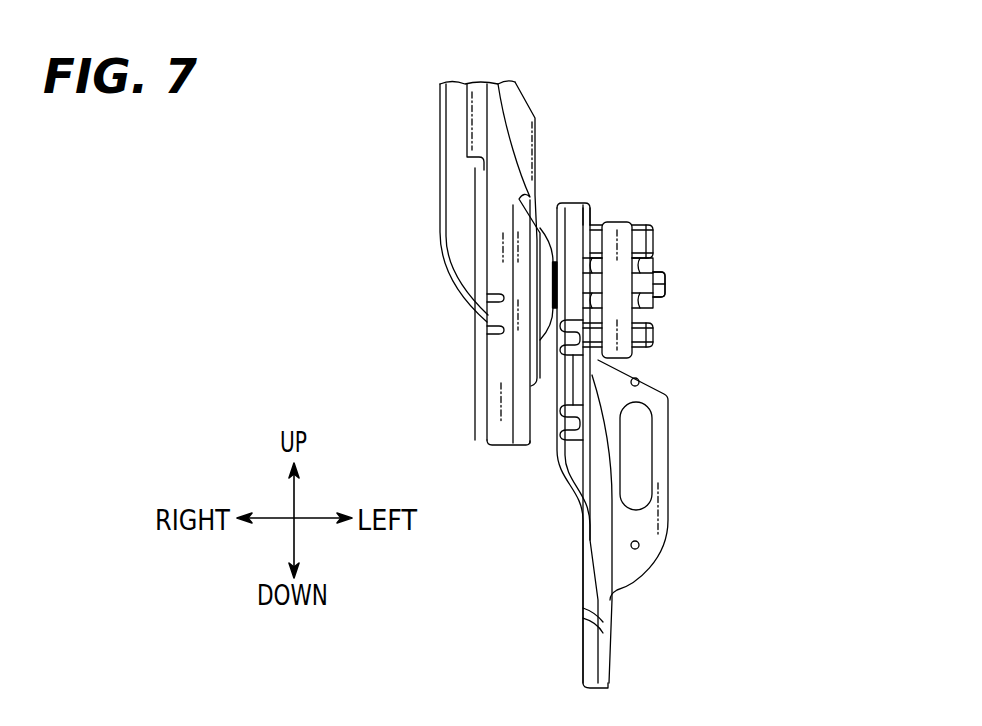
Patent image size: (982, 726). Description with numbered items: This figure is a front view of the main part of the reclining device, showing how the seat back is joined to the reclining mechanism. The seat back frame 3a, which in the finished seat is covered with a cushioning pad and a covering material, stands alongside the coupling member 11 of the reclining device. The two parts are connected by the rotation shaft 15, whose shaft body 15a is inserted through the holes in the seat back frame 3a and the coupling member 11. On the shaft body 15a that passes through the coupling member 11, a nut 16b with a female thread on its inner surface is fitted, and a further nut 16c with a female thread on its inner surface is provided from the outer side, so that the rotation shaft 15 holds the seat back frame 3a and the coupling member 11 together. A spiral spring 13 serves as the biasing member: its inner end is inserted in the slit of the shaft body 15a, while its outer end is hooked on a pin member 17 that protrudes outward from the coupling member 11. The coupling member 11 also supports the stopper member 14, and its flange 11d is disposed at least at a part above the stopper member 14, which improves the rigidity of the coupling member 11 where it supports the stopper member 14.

The seat back frame 3a is at (528, 110).
The coupling member 11 is at (587, 647).
The flange 11d is at (587, 202).
The spiral spring 13 is at (617, 222).
The stopper member 14 is at (645, 243).
The rotation shaft 15 is at (663, 292).
The shaft body 15a is at (659, 284).
The nut 16b is at (587, 303).
The nut 16c is at (645, 272).
The pin member 17 is at (655, 335).